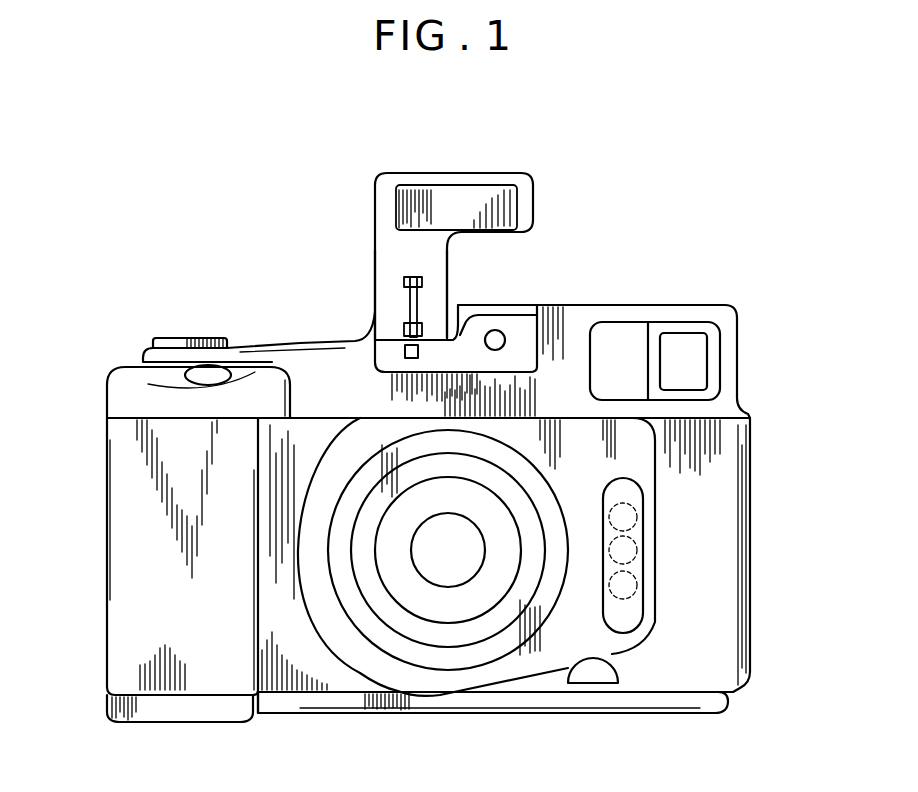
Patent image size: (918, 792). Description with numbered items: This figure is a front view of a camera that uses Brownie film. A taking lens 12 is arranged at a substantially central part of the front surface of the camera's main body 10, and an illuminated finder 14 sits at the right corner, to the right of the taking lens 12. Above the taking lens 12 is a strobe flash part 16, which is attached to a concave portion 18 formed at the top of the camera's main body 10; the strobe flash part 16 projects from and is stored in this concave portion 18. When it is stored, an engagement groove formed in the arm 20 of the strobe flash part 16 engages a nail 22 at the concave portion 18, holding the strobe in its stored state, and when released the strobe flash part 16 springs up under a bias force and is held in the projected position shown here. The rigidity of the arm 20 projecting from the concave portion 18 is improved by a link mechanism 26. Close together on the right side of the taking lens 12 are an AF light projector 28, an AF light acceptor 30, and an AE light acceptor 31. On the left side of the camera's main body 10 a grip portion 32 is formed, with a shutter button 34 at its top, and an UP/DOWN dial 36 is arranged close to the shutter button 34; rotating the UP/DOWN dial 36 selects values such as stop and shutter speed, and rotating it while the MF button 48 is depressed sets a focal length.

The camera's main body 10 is at (752, 268).
The taking lens 12 is at (430, 578).
The illuminated finder 14 is at (697, 362).
The strobe flash part 16 is at (481, 183).
The concave portion 18 is at (512, 360).
The arm 20 is at (386, 250).
The nail 22 is at (405, 350).
The link mechanism 26 is at (413, 297).
The AF light projector 28 is at (640, 517).
The AF light acceptor 30 is at (638, 594).
The AE light acceptor 31 is at (630, 552).
The grip portion 32 is at (113, 600).
The shutter button 34 is at (212, 372).
The UP/DOWN dial 36 is at (183, 338).
The MF button 48 is at (598, 683).